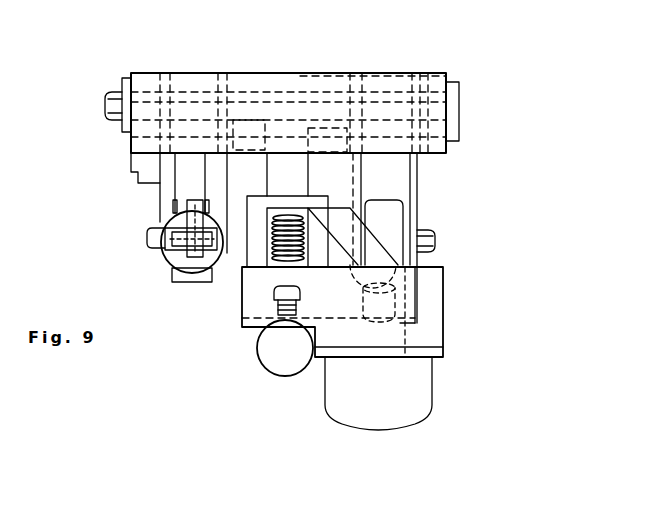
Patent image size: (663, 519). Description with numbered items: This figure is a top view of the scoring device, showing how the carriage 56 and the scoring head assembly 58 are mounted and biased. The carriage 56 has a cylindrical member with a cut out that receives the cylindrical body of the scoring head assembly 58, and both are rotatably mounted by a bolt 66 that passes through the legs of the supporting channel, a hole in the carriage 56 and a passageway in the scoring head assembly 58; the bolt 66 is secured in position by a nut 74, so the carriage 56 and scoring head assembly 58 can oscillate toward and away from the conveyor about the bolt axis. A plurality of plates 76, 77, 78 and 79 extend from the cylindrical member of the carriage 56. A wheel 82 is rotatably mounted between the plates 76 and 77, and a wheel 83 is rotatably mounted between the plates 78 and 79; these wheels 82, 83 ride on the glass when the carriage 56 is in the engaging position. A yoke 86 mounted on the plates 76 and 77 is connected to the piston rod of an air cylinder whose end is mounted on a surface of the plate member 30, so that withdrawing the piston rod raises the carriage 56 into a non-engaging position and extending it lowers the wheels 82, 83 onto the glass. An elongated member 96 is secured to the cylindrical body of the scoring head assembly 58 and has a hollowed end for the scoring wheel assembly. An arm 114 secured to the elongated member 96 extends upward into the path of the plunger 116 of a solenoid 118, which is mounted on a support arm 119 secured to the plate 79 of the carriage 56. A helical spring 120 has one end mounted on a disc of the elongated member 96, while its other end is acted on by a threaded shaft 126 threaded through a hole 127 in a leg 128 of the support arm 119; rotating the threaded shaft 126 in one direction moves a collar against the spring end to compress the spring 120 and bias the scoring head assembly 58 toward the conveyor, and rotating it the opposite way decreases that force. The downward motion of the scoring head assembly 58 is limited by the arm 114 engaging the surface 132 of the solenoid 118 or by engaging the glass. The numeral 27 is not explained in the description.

The plate member 30 is at (452, 62).
The bolt 66 is at (462, 110).
The nut 74 is at (110, 124).
The plate 76 is at (161, 202).
The plate 77 is at (226, 176).
The wheel 82 is at (188, 284).
The yoke 86 is at (226, 266).
The helical spring 120 is at (290, 206).
The arm 114 is at (338, 258).
The elongated member 96 is at (318, 163).
The scoring head assembly 58 is at (315, 184).
The plate 78 is at (360, 176).
The wheel 83 is at (384, 189).
The carriage 56 is at (432, 181).
The plate 79 is at (417, 203).
The assembly 27 is at (467, 219).
The surface of the solenoid 132 is at (431, 290).
The support arm 119 is at (427, 307).
The hole 127 is at (300, 306).
The threaded shaft 126 is at (264, 312).
The leg 128 is at (249, 325).
The plunger 116 is at (387, 321).
The solenoid 118 is at (394, 438).